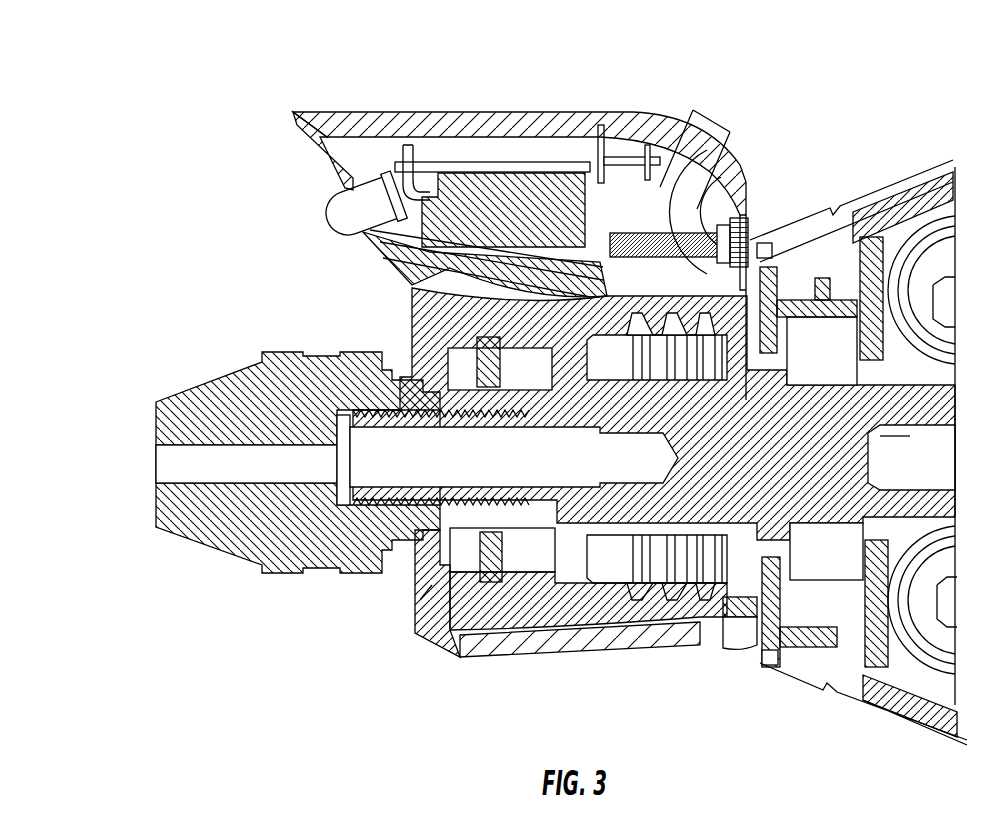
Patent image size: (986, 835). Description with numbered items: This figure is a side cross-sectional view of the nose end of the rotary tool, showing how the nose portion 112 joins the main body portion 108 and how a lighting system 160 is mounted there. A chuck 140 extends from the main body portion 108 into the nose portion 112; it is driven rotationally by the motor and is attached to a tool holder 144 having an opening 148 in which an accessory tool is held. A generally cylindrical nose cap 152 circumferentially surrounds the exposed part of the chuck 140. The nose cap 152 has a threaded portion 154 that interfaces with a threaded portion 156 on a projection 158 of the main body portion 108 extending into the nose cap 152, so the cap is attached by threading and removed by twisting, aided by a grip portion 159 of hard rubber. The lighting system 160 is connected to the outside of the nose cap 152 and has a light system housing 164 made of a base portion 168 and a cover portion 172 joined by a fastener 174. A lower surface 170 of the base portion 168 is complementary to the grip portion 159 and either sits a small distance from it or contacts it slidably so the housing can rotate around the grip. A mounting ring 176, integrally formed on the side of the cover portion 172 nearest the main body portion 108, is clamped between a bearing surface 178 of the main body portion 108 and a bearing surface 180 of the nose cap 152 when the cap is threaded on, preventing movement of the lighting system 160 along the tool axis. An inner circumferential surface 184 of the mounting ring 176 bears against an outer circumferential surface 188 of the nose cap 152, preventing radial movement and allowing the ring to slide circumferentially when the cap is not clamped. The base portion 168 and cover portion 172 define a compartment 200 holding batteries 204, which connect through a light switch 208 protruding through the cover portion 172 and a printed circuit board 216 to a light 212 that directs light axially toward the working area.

The main body portion 108 is at (893, 727).
The nose portion 112 is at (150, 338).
The chuck 140 is at (517, 512).
The tool holder 144 is at (232, 545).
The opening 148 is at (170, 465).
The nose cap 152 is at (432, 652).
The threaded portion 154 is at (637, 597).
The threaded portion 156 is at (678, 593).
The projection 158 is at (602, 553).
The grip portion 159 is at (598, 640).
The lighting system 160 is at (252, 130).
The light system housing 164 is at (757, 153).
The base portion 168 is at (387, 248).
The lower surface 170 is at (497, 290).
The cover portion 172 is at (632, 122).
The fastener 174 is at (713, 232).
The mounting ring 176 is at (745, 276).
The bearing surface 178 is at (672, 198).
The bearing surface 180 is at (730, 288).
The inner circumferential surface 184 is at (729, 600).
The outer circumferential surface 188 is at (740, 617).
The compartment 200 is at (580, 160).
The batteries 204 is at (475, 185).
The light switch 208 is at (712, 120).
The light 212 is at (340, 210).
The printed circuit board 216 is at (422, 165).